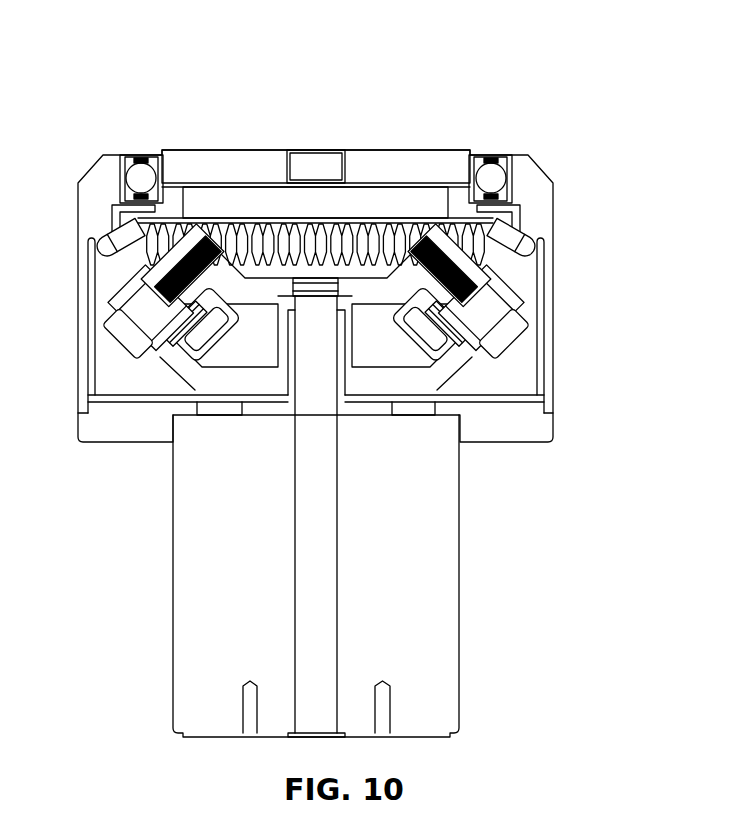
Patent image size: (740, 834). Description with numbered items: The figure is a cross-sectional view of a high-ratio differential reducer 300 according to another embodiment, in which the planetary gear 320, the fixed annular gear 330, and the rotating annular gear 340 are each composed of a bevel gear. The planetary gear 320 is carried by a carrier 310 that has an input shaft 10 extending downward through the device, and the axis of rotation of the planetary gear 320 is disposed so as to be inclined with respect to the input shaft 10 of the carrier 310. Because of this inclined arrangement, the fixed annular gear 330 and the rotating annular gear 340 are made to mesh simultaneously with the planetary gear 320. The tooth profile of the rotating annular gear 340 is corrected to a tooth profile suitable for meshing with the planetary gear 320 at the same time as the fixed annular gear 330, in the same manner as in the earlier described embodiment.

The high-ratio differential reducer 300 is at (108, 88).
The rotating annular gear 340 is at (505, 220).
The fixed annular gear 330 is at (541, 227).
The planetary gear 320 is at (515, 263).
The carrier 310 is at (372, 292).
The input shaft 10 is at (323, 568).